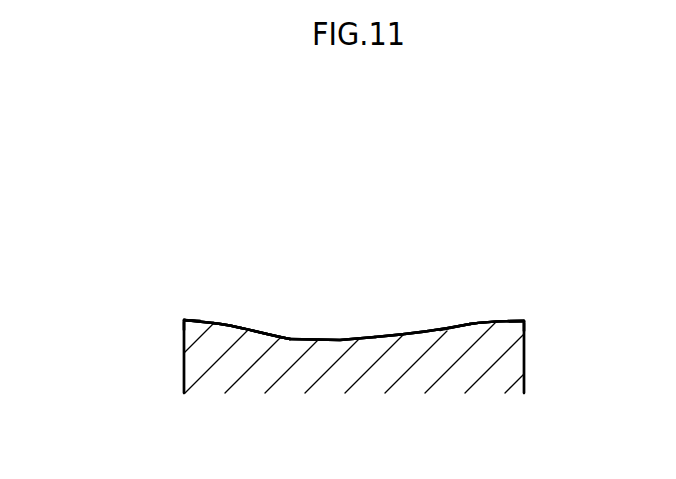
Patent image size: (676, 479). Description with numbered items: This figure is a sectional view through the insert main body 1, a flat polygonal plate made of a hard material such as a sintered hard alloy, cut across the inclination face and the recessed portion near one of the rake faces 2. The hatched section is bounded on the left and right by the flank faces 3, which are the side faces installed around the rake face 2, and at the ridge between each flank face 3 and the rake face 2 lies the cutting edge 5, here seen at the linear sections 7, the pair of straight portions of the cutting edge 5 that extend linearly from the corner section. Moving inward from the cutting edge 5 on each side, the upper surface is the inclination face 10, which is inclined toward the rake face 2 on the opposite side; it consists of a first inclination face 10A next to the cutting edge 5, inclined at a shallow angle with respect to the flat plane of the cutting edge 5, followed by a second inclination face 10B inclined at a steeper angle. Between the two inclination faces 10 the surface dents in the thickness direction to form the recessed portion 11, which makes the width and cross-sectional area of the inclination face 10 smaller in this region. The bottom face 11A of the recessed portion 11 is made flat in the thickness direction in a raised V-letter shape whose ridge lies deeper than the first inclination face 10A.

The insert main body 1 is at (289, 292).
The rake face 2 is at (521, 292).
The flank face 3 is at (173, 365).
The cutting edge 5 is at (184, 320).
The linear section 7 is at (354, 325).
The inclination face 10 is at (197, 193).
The first inclination face 10A is at (202, 320).
The second inclination face 10B is at (263, 325).
The recessed portion 11 is at (342, 298).
The bottom face 11A is at (375, 336).